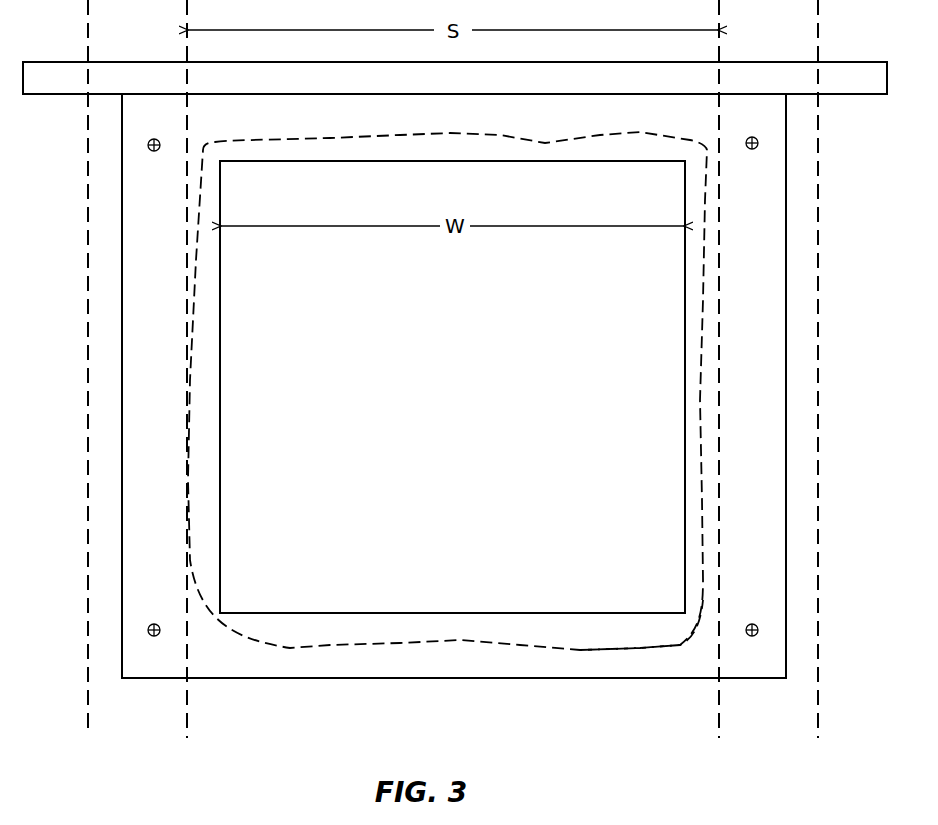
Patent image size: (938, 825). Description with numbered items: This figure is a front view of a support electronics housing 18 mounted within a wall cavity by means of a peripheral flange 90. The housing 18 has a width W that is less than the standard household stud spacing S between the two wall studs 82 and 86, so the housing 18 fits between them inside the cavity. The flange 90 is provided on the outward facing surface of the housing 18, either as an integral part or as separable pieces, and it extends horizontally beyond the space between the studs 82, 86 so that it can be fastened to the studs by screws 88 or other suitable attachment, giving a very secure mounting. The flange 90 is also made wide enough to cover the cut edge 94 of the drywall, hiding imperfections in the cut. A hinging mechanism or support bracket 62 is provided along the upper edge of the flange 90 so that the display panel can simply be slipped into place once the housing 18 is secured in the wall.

The support electronics housing 18 is at (452, 387).
The support bracket 62 is at (55, 82).
The stud 82 is at (154, 710).
The stud 86 is at (752, 708).
The screws 88 is at (154, 152).
The flange 90 is at (253, 665).
The cut edge 94 is at (617, 648).